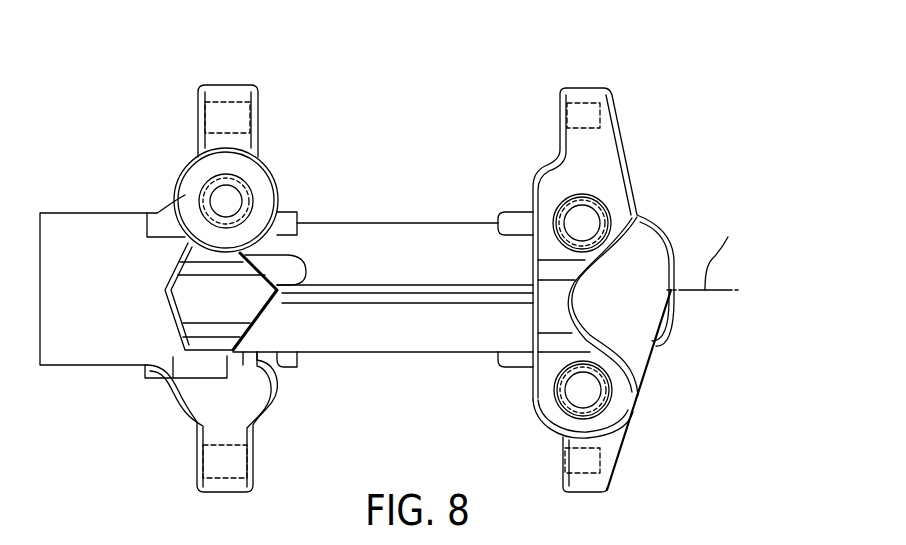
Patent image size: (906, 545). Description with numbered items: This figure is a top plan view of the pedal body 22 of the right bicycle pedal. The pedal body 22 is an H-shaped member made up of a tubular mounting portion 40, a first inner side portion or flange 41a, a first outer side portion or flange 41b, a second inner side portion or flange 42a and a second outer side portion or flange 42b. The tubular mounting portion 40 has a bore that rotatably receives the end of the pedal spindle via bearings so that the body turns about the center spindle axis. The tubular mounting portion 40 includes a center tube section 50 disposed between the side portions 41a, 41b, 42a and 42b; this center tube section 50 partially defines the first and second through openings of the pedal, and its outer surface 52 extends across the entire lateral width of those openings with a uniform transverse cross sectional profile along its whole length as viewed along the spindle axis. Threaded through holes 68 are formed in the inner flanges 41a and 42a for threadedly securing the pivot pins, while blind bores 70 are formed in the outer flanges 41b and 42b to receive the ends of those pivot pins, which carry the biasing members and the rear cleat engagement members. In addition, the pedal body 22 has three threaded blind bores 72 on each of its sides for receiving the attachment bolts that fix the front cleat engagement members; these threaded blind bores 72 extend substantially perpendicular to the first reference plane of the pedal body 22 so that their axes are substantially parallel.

The pedal body 22 is at (656, 94).
The tubular mounting portion 40 is at (400, 316).
The first inner side portion or flange 41a is at (215, 90).
The first outer side portion or flange 41b is at (593, 146).
The second inner side portion or flange 42a is at (217, 478).
The second outer side portion or flange 42b is at (583, 482).
The center tube section 50 is at (497, 208).
The outer surface 52 is at (342, 330).
The threaded through holes 68 is at (236, 105).
The blind bores 70 is at (580, 104).
The threaded blind bores 72 is at (226, 187).